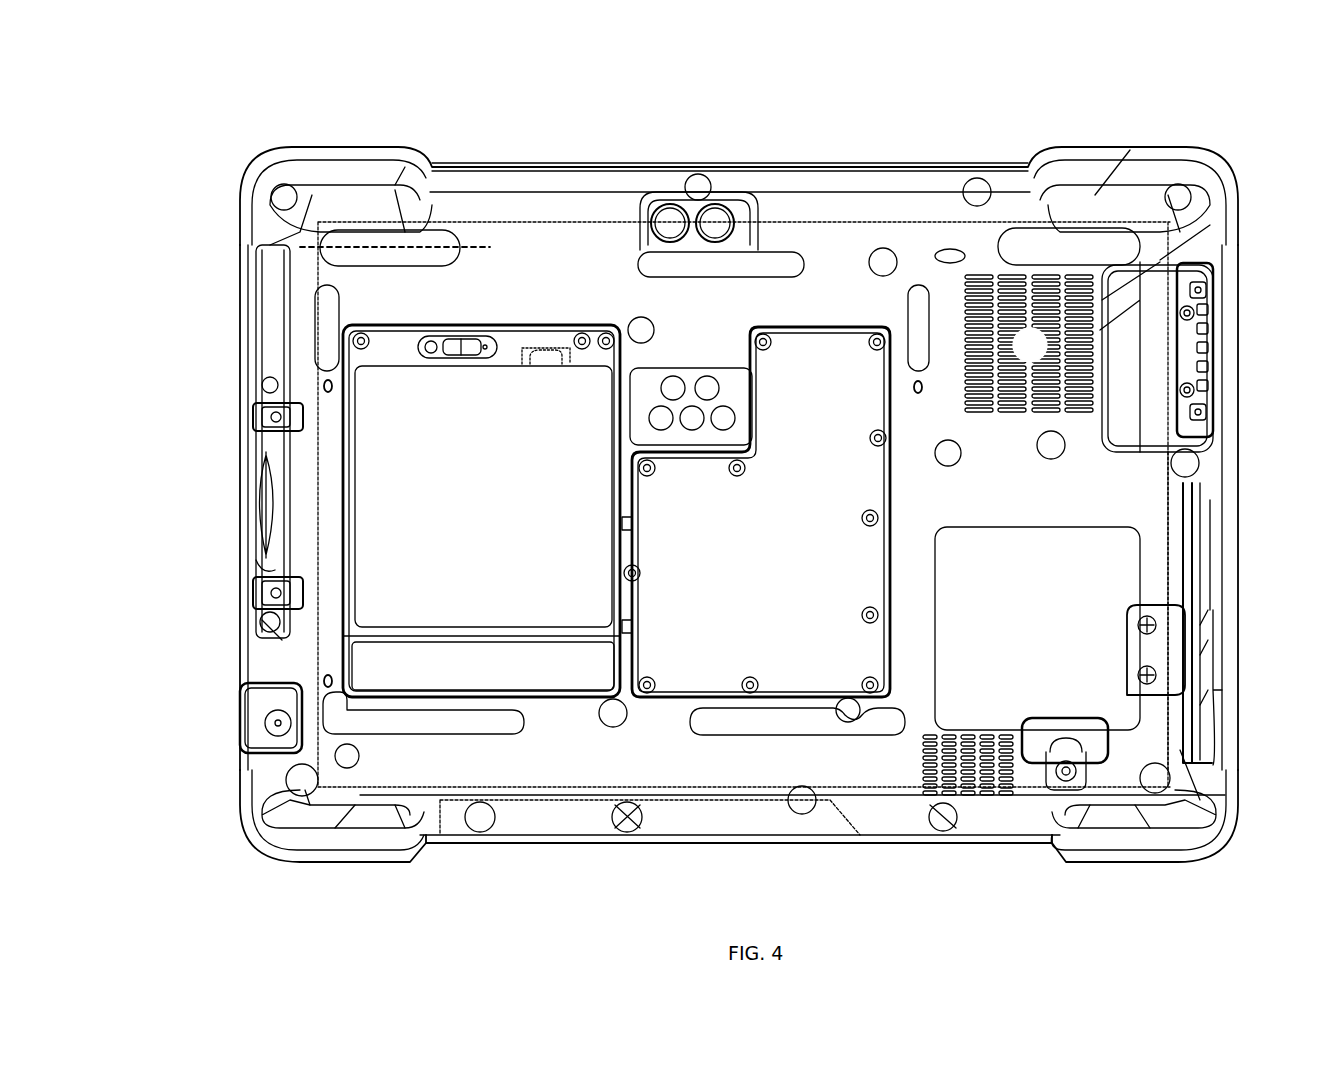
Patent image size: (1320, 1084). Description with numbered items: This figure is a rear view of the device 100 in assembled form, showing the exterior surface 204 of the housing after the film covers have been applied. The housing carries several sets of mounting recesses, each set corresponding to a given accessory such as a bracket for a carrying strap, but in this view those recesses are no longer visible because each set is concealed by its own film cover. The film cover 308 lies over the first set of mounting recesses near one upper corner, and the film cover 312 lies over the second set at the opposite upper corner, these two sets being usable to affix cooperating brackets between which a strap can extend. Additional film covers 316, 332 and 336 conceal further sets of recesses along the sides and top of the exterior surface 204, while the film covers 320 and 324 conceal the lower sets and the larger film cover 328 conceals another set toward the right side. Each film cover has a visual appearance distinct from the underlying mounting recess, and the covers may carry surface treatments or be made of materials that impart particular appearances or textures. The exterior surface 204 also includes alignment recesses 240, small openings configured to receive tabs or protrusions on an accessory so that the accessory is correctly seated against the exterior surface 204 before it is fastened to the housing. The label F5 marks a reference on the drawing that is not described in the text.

The device 100 is at (195, 143).
The exterior surface 204 is at (540, 270).
The alignment recesses 240 is at (322, 387).
The film cover 308 is at (405, 235).
The film cover 312 is at (1072, 243).
The film cover 316 is at (330, 335).
The film cover 320 is at (463, 720).
The film cover 324 is at (773, 722).
The film cover 328 is at (1075, 597).
The film cover 332 is at (918, 305).
The film cover 336 is at (763, 265).
The reference dimension F5 is at (490, 245).